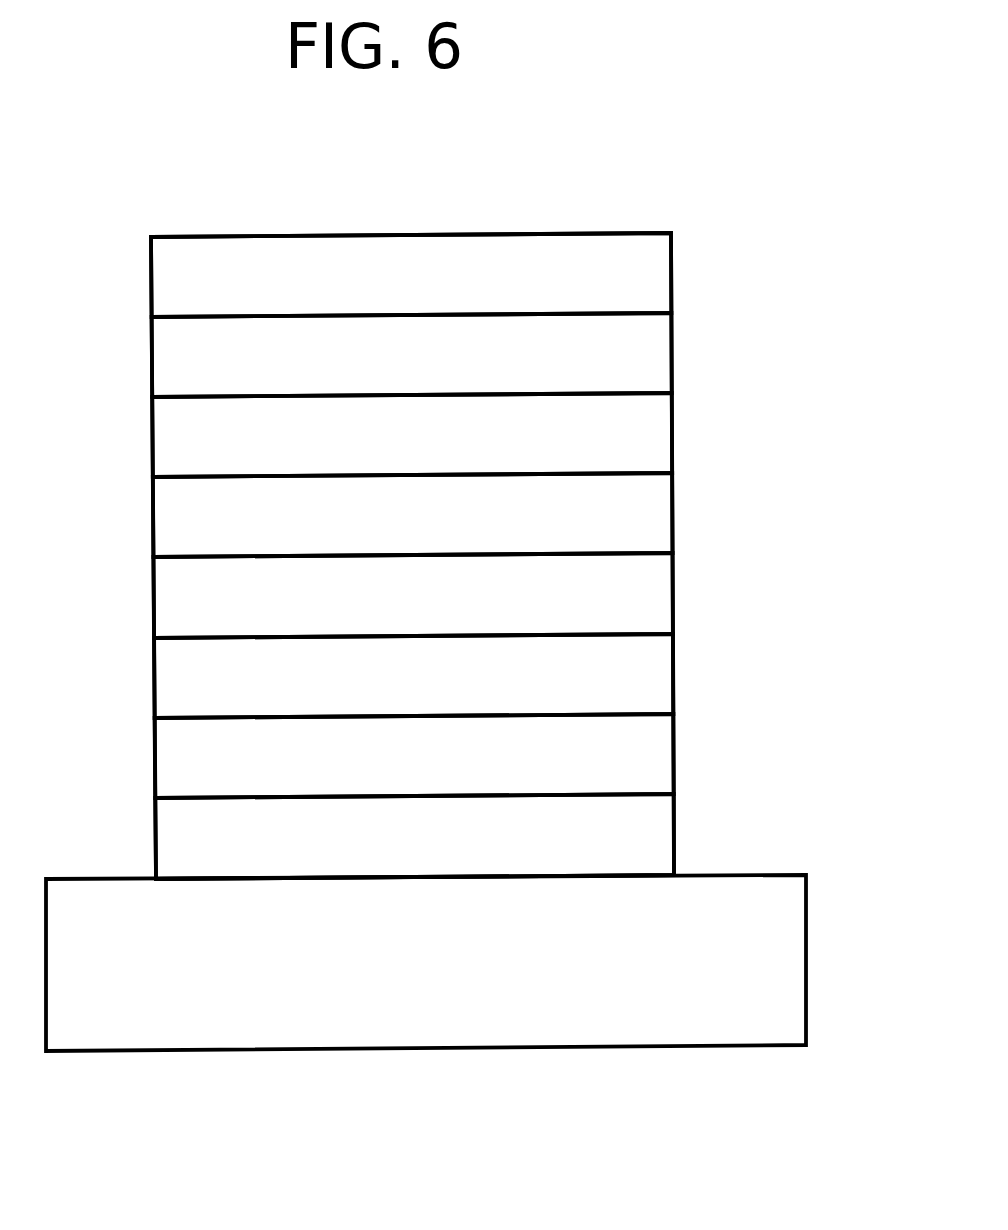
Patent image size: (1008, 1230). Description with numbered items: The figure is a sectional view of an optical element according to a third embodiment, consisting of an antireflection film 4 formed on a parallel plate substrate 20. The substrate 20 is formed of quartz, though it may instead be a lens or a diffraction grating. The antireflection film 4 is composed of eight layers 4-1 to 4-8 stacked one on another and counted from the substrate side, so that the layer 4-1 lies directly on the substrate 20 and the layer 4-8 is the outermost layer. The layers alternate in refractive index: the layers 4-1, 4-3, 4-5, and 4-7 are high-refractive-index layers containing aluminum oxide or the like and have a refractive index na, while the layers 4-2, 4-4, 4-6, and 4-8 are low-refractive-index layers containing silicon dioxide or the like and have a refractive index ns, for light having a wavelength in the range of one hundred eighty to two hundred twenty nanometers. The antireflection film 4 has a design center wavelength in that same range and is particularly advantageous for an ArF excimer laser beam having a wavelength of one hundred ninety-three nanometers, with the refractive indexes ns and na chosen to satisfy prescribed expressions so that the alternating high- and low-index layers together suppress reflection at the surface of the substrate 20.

The antireflection film 4 is at (723, 475).
The high-refractive-index layer 4-1 is at (180, 837).
The low-refractive-index layer 4-2 is at (180, 756).
The high-refractive-index layer 4-3 is at (180, 676).
The low-refractive-index layer 4-4 is at (180, 596).
The high-refractive-index layer 4-5 is at (180, 515).
The low-refractive-index layer 4-6 is at (180, 435).
The high-refractive-index layer 4-7 is at (180, 355).
The low-refractive-index layer 4-8 is at (180, 275).
The substrate 20 is at (778, 943).